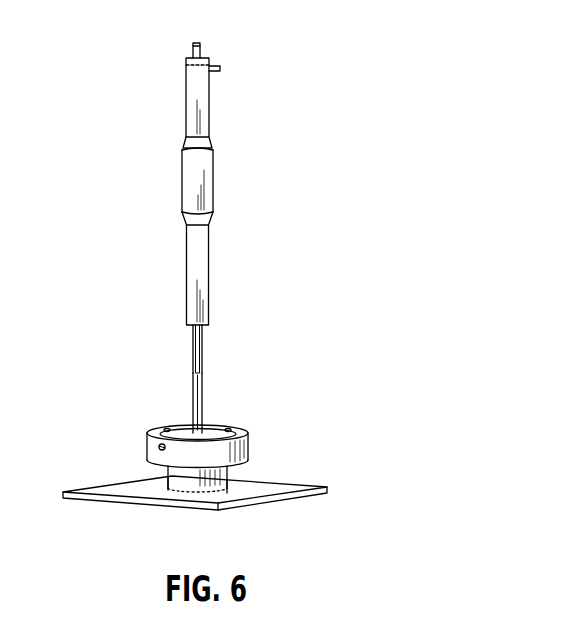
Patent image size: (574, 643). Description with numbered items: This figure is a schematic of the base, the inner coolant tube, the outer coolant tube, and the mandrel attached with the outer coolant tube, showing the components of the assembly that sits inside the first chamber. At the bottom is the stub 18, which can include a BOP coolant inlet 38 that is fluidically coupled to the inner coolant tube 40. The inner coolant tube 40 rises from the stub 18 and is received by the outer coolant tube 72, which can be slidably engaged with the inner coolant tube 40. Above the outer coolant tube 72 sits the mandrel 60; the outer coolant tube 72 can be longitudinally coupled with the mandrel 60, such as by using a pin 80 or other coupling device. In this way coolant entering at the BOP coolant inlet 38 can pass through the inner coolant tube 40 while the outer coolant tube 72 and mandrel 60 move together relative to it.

The stub 18 is at (250, 447).
The BOP coolant inlet 38 is at (159, 447).
The inner coolant tube 40 is at (203, 400).
The outer coolant tube 72 is at (203, 347).
The mandrel 60 is at (210, 112).
The pin 80 is at (218, 63).